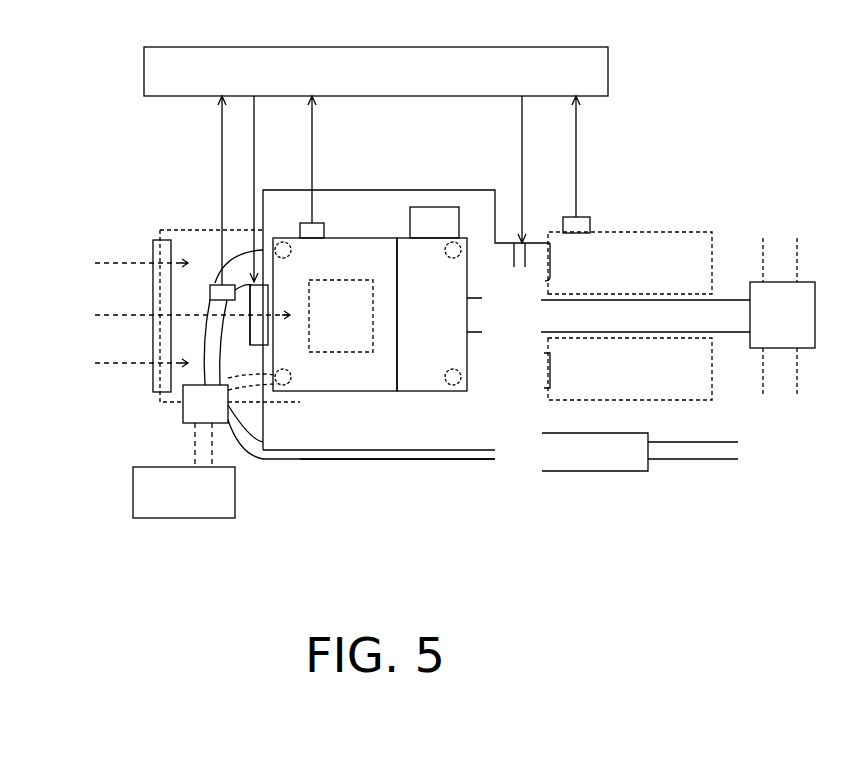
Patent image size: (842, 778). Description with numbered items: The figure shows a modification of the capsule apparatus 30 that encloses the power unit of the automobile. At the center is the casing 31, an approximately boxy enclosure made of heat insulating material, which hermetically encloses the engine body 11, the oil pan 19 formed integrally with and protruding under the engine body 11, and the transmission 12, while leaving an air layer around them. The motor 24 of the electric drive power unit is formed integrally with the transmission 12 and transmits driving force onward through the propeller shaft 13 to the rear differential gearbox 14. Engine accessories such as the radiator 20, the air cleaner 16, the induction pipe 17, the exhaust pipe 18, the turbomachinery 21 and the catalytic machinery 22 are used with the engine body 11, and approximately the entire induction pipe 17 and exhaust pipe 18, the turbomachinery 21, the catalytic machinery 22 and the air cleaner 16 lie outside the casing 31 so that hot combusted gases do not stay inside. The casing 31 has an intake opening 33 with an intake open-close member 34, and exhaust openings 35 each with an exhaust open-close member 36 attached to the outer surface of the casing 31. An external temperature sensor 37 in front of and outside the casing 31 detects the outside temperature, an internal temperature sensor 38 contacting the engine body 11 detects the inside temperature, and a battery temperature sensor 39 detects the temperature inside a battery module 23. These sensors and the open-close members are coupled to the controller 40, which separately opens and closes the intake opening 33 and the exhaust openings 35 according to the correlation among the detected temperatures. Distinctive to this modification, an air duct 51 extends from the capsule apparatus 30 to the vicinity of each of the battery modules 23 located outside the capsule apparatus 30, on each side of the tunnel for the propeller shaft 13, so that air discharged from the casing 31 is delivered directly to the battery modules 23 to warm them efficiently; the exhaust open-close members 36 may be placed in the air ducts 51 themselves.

The engine body 11 is at (362, 372).
The transmission 12 is at (432, 373).
The propeller shaft 13 is at (641, 322).
The rear differential gearbox 14 is at (753, 342).
The air cleaner 16 is at (237, 503).
The induction pipe 17 is at (230, 440).
The exhaust pipe 18 is at (397, 485).
The oil pan 19 is at (325, 340).
The radiator 20 is at (155, 284).
The turbomachinery 21 is at (185, 420).
The catalytic machinery 22 is at (583, 472).
The battery modules 23 is at (676, 232).
The motor 24 is at (452, 227).
The capsule apparatus 30 is at (735, 120).
The casing 31 is at (387, 442).
The intake opening 33 is at (268, 352).
The intake open-close member 34 is at (255, 322).
The exhaust opening 35 is at (475, 266).
The exhaust open-close member 36 is at (553, 262).
The external temperature sensor 37 is at (213, 283).
The internal temperature sensor 38 is at (305, 226).
The battery temperature sensor 39 is at (585, 217).
The controller 40 is at (606, 74).
The air duct 51 is at (532, 235).